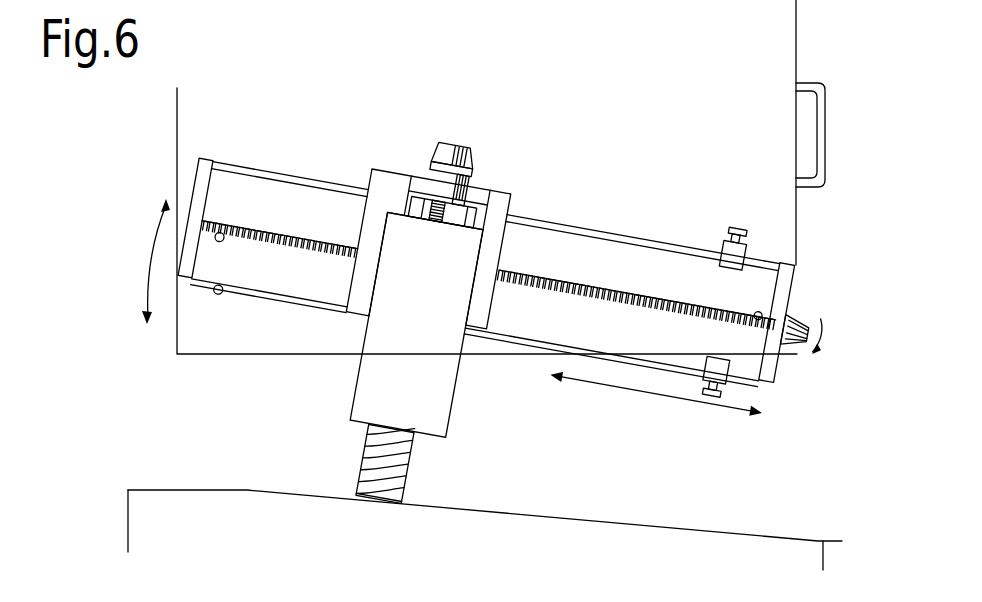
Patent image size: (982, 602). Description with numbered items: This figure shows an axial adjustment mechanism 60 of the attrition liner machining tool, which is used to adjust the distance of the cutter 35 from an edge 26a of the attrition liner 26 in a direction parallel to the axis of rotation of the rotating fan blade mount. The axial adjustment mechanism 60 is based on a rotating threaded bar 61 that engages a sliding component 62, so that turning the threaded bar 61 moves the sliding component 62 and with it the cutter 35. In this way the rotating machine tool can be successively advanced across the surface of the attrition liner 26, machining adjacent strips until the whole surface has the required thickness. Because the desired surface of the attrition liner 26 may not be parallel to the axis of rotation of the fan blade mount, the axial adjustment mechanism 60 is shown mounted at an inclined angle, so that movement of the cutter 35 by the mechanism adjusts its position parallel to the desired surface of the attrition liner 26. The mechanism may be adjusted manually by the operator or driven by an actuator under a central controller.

The axial adjustment mechanism 60 is at (166, 186).
The rotating threaded bar 61 is at (614, 287).
The sliding component 62 is at (392, 187).
The cutter 35 is at (432, 474).
The attrition liner 26 is at (252, 495).
The edge of the attrition liner 26a is at (128, 490).